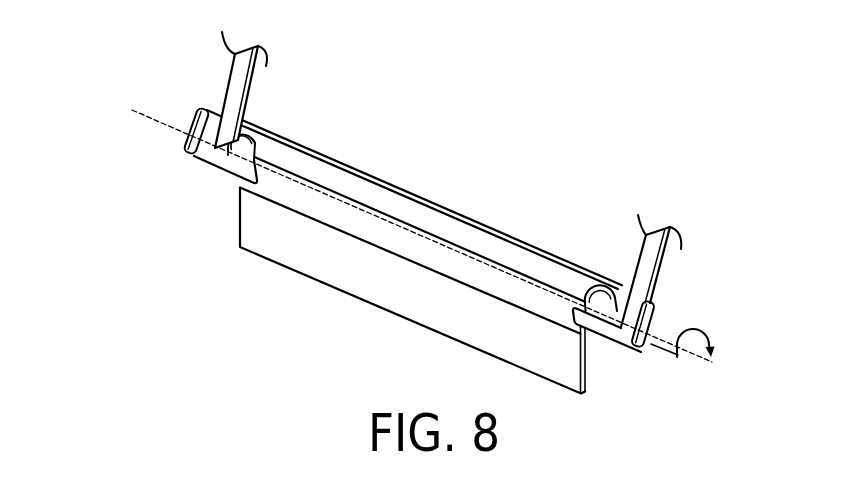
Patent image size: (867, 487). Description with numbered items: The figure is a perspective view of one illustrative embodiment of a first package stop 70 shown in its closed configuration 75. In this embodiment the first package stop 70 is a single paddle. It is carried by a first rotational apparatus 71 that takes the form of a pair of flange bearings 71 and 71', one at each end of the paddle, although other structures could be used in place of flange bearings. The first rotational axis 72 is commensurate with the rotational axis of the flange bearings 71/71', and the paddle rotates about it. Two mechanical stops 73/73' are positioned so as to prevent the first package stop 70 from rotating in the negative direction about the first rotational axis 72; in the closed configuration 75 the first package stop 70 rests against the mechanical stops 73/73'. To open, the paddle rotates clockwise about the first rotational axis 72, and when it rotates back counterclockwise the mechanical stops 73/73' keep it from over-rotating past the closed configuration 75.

The first package stop 70 is at (338, 290).
The first rotational apparatus 71 is at (644, 352).
The flange bearing 71' is at (168, 145).
The first rotational axis 72 is at (450, 243).
The mechanical stop 73 is at (600, 259).
The mechanical stop 73' is at (267, 117).
The closed configuration 75 is at (491, 162).